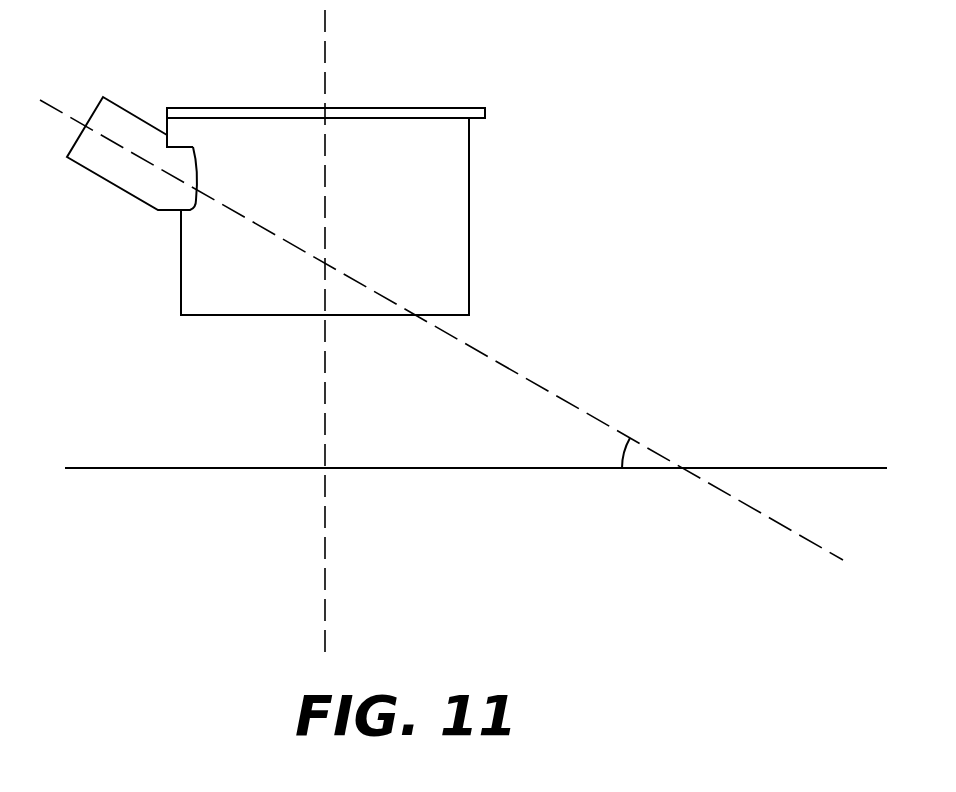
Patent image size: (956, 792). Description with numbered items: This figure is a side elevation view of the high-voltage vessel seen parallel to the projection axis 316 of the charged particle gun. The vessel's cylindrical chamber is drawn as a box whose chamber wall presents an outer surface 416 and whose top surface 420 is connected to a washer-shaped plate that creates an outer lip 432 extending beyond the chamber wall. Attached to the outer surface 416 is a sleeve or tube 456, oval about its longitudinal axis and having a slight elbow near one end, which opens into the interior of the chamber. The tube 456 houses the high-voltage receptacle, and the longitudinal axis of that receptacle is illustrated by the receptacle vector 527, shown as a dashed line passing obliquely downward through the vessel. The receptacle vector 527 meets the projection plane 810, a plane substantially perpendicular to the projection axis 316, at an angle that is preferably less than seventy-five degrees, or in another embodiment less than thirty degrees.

The tube 456 is at (137, 115).
The top surface 420 is at (400, 108).
The outer lip 432 is at (486, 110).
The outer surface 416 is at (458, 198).
The projection plane 810 is at (130, 469).
The projection axis 316 is at (325, 560).
The receptacle vector 527 is at (780, 528).